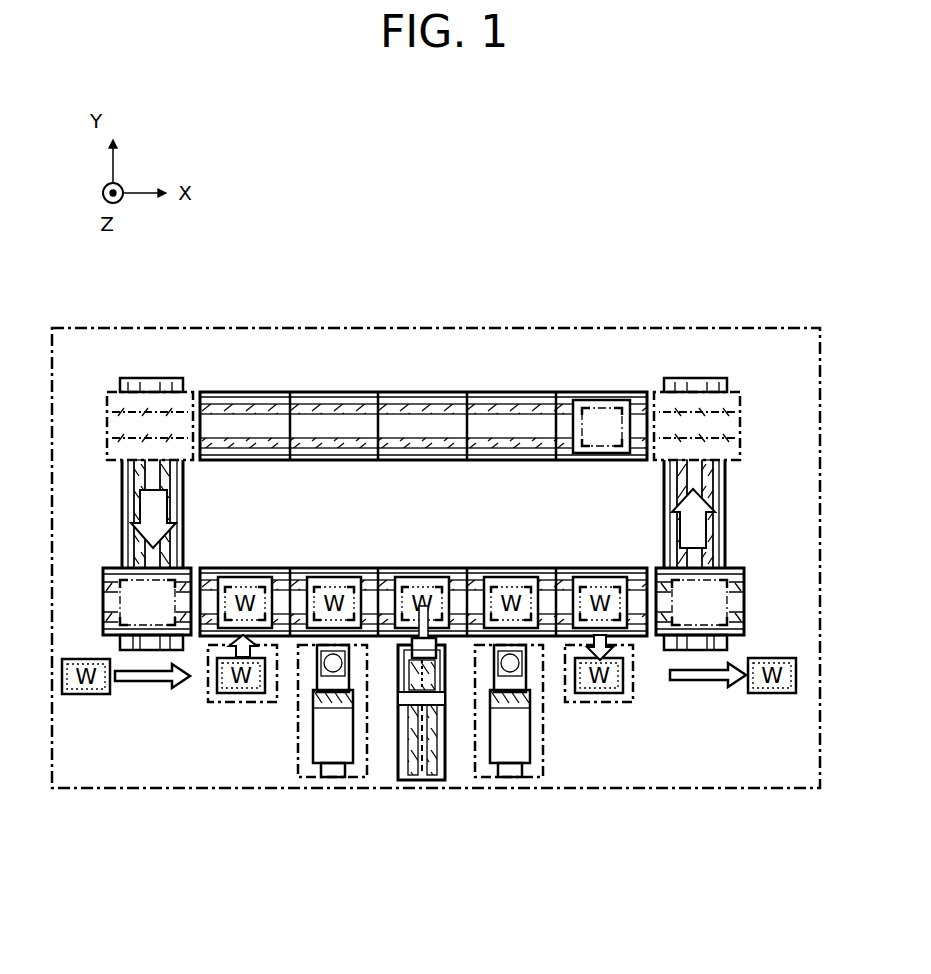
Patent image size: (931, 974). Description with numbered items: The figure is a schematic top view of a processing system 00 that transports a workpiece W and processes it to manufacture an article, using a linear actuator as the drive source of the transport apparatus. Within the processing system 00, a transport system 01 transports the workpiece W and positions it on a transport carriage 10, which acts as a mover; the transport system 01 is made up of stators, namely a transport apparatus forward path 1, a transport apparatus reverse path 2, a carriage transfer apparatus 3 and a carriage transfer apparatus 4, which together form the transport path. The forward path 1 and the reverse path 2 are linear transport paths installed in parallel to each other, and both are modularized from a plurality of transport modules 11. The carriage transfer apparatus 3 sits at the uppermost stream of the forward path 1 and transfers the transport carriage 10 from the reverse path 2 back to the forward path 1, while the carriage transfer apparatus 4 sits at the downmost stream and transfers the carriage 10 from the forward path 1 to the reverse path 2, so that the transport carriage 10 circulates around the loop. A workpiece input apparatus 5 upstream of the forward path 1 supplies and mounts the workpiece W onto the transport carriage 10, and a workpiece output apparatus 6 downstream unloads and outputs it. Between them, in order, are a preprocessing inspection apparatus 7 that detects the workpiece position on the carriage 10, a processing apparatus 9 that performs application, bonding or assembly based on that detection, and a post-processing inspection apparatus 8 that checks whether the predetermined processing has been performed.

The processing system 00 is at (323, 326).
The transport system 01 is at (763, 389).
The transport apparatus forward path 1 is at (630, 636).
The transport apparatus reverse path 2 is at (235, 397).
The carriage transfer apparatus 3 is at (185, 500).
The carriage transfer apparatus 4 is at (727, 515).
The workpiece input apparatus 5 is at (245, 703).
The workpiece output apparatus 6 is at (595, 703).
The preprocessing inspection apparatus 7 is at (322, 778).
The post-processing inspection apparatus 8 is at (505, 778).
The processing apparatus 9 is at (412, 778).
The transport carriage 10 is at (598, 449).
The transport module 11 is at (607, 392).